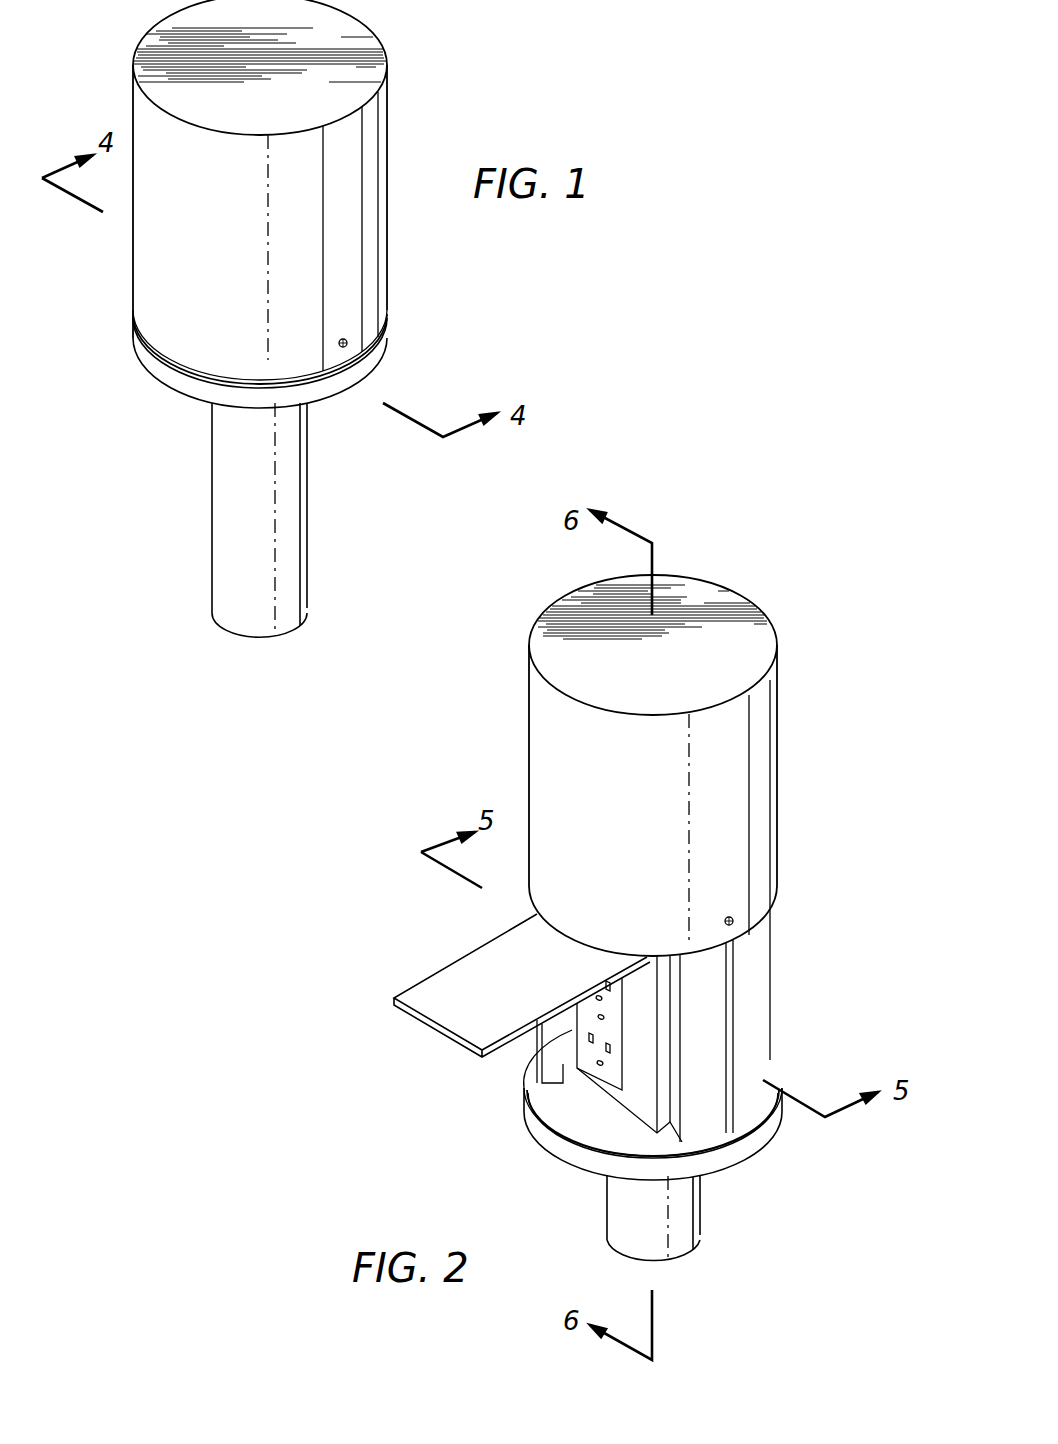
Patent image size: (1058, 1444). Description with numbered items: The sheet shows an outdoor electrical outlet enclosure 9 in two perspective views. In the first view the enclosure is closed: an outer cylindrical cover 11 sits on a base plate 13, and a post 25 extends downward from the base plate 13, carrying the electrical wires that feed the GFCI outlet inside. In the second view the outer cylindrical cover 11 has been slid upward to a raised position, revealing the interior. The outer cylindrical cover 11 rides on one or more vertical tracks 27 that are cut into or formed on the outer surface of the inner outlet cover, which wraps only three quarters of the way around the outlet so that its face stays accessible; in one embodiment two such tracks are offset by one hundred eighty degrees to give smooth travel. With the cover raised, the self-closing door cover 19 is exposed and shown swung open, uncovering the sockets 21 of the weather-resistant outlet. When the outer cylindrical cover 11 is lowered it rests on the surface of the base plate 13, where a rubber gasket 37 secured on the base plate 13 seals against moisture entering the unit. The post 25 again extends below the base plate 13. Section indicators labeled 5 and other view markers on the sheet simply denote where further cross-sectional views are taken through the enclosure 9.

In FIG. 1, the electrical outlet enclosure 9 is at (125, 255).
In FIG. 1, the outer cylindrical cover 11 is at (370, 147).
In FIG. 2, the outer cylindrical cover 11 is at (760, 740).
In FIG. 1, the base plate 13 is at (198, 385).
In FIG. 1, the post 25 is at (280, 520).
In FIG. 2, the post 25 is at (678, 1222).
In FIG. 1, the rubber gasket 37 is at (380, 336).
In FIG. 2, the rubber gasket 37 is at (753, 1122).
In FIG. 2, the door cover 19 is at (440, 990).
In FIG. 2, the inner column / outlet body 5 is at (757, 960).
In FIG. 2, the sockets 21 is at (588, 1047).
In FIG. 2, the vertical tracks 27 is at (733, 1027).